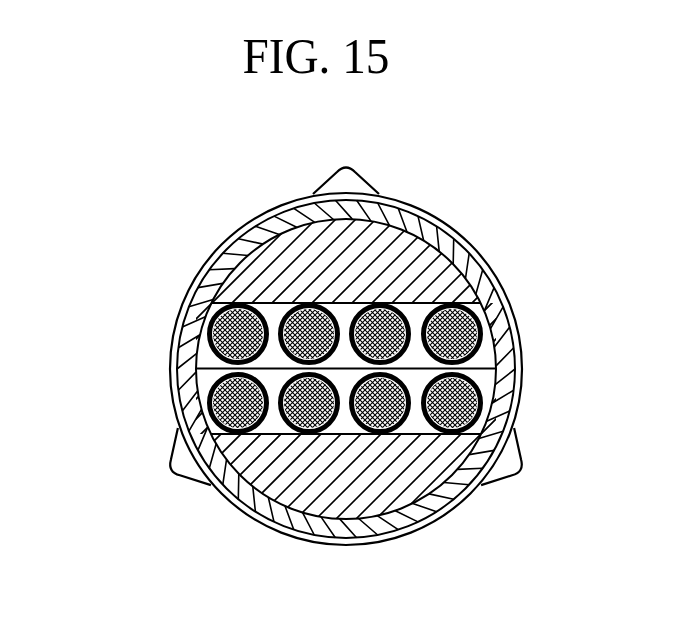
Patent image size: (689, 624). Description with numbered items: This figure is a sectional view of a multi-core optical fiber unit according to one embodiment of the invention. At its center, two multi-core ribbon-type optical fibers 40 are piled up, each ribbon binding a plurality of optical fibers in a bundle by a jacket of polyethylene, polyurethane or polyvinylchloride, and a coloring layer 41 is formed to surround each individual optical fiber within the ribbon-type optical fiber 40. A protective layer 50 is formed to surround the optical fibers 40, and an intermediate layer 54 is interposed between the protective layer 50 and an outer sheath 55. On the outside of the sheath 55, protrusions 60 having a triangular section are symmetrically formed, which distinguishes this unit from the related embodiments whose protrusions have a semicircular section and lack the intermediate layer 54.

The ribbon-type optical fiber 40 is at (457, 293).
The coloring layer 41 is at (313, 302).
The protective layer 50 is at (418, 300).
The intermediate layer 54 is at (458, 500).
The sheath 55 is at (250, 513).
The protrusions 60 is at (180, 458).